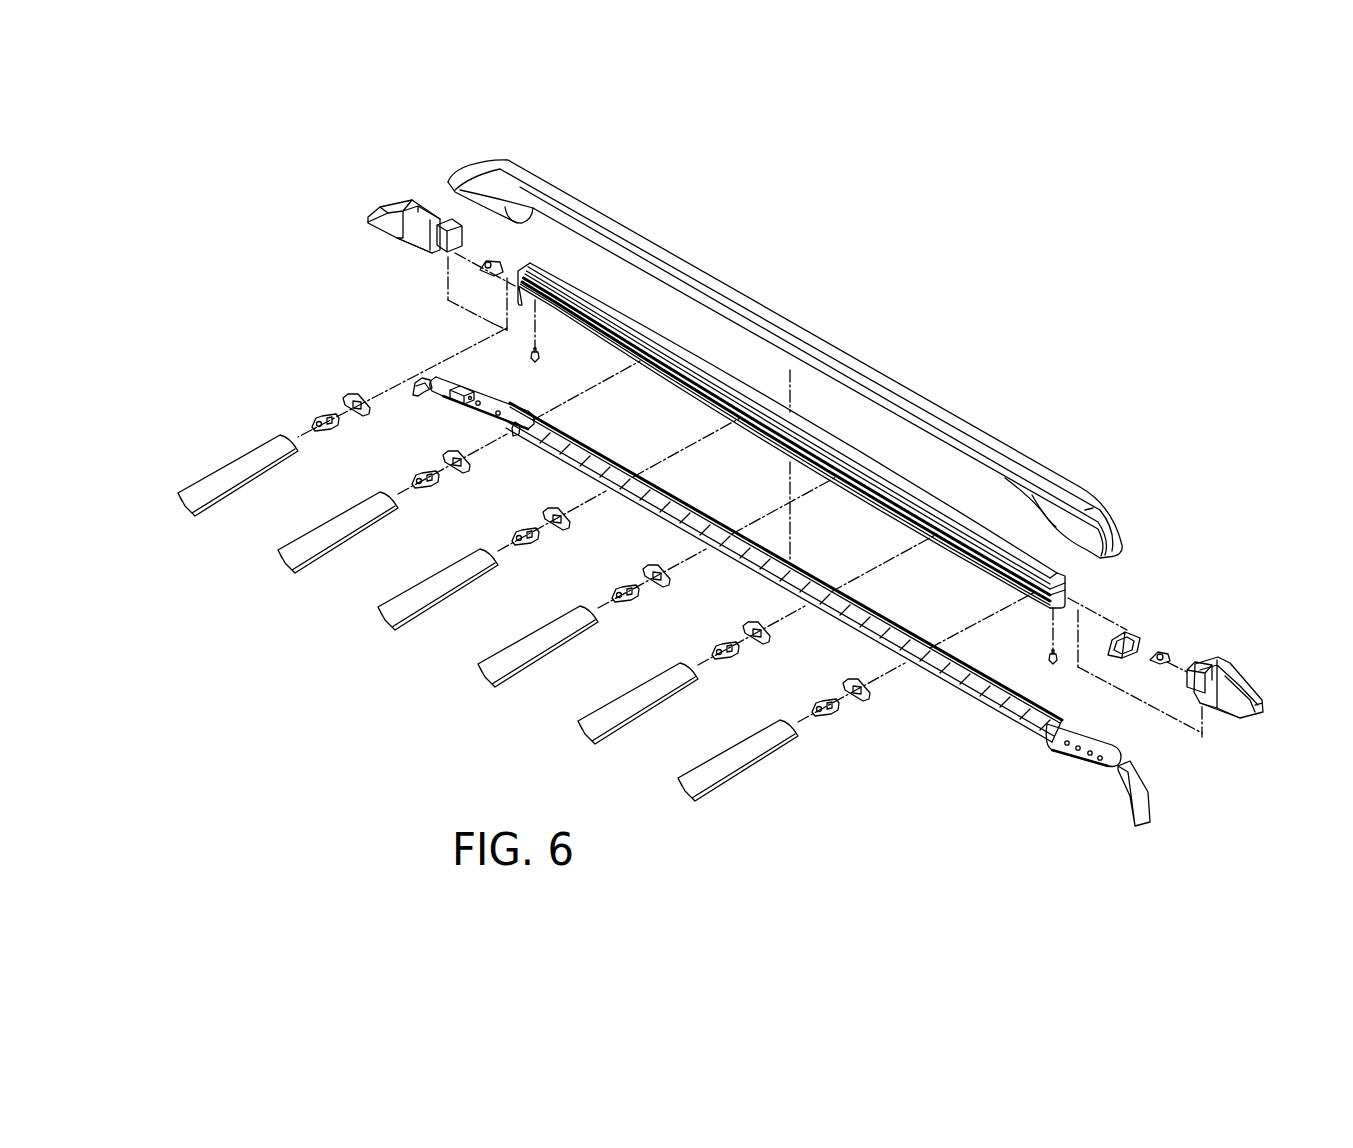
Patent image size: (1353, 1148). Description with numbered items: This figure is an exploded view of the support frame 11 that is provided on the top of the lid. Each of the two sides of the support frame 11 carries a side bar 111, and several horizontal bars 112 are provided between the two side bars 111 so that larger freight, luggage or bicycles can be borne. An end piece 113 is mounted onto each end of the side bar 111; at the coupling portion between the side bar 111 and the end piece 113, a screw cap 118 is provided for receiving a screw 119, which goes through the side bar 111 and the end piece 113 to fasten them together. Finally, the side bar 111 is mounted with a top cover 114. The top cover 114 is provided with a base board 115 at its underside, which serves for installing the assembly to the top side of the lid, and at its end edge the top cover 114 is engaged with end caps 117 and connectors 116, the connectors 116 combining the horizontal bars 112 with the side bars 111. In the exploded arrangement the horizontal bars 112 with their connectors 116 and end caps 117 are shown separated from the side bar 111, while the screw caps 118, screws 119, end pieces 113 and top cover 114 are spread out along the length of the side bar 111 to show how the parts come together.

The support frame 11 is at (900, 252).
The side bar 111 is at (697, 363).
The horizontal bar 112 is at (243, 455).
The end piece 113 is at (379, 216).
The top cover 114 is at (935, 410).
The base board 115 is at (1105, 742).
The connector 116 is at (317, 420).
The end cap 117 is at (355, 393).
The screw cap 118 is at (491, 262).
The screw 119 is at (530, 357).